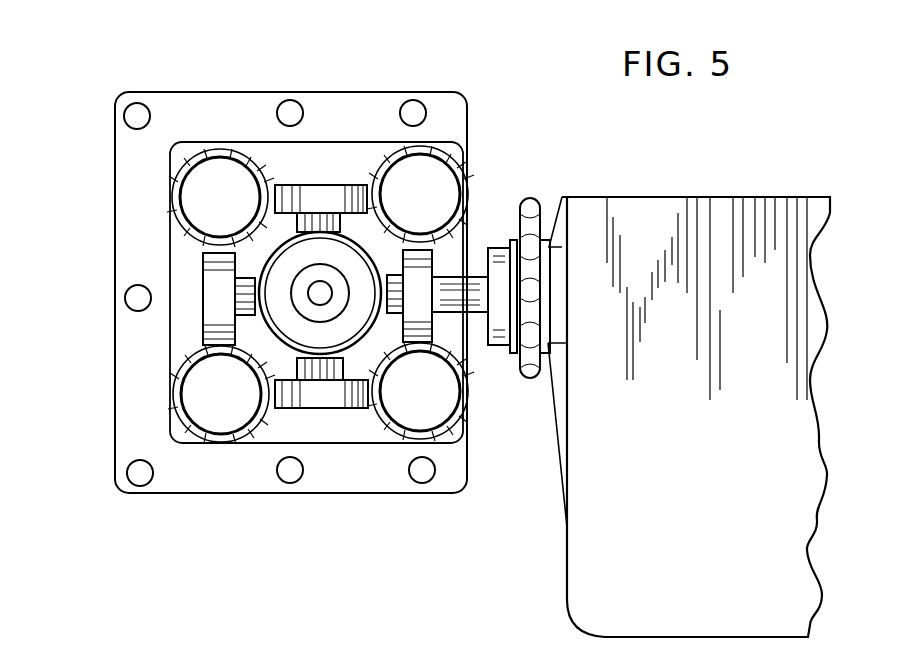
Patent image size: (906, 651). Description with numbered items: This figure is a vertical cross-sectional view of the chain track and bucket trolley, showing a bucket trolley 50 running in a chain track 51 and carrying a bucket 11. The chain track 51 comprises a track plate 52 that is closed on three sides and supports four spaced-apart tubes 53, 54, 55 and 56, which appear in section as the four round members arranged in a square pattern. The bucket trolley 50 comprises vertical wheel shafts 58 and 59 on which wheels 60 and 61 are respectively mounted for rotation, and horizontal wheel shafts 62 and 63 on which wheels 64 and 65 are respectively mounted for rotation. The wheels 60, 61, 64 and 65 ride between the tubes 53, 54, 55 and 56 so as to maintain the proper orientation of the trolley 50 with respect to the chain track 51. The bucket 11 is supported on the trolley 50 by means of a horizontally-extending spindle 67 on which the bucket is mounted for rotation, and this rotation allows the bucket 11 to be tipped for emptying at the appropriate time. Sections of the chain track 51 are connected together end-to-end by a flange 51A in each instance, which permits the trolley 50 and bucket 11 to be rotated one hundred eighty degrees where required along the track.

The bucket 11 is at (640, 217).
The bucket trolley 50 is at (335, 168).
The chain track 51 is at (267, 285).
The flange 51A is at (258, 482).
The track plate 52 is at (130, 373).
The tube 53 is at (437, 150).
The tube 54 is at (216, 151).
The tube 55 is at (207, 440).
The tube 56 is at (455, 425).
The vertical wheel shaft 58 is at (305, 216).
The vertical wheel shaft 59 is at (318, 372).
The wheel 60 is at (317, 193).
The wheel 61 is at (352, 402).
The horizontal wheel shaft 62 is at (222, 278).
The horizontal wheel shaft 63 is at (442, 262).
The wheel 64 is at (212, 315).
The wheel 65 is at (422, 312).
The spindle 67 is at (487, 290).